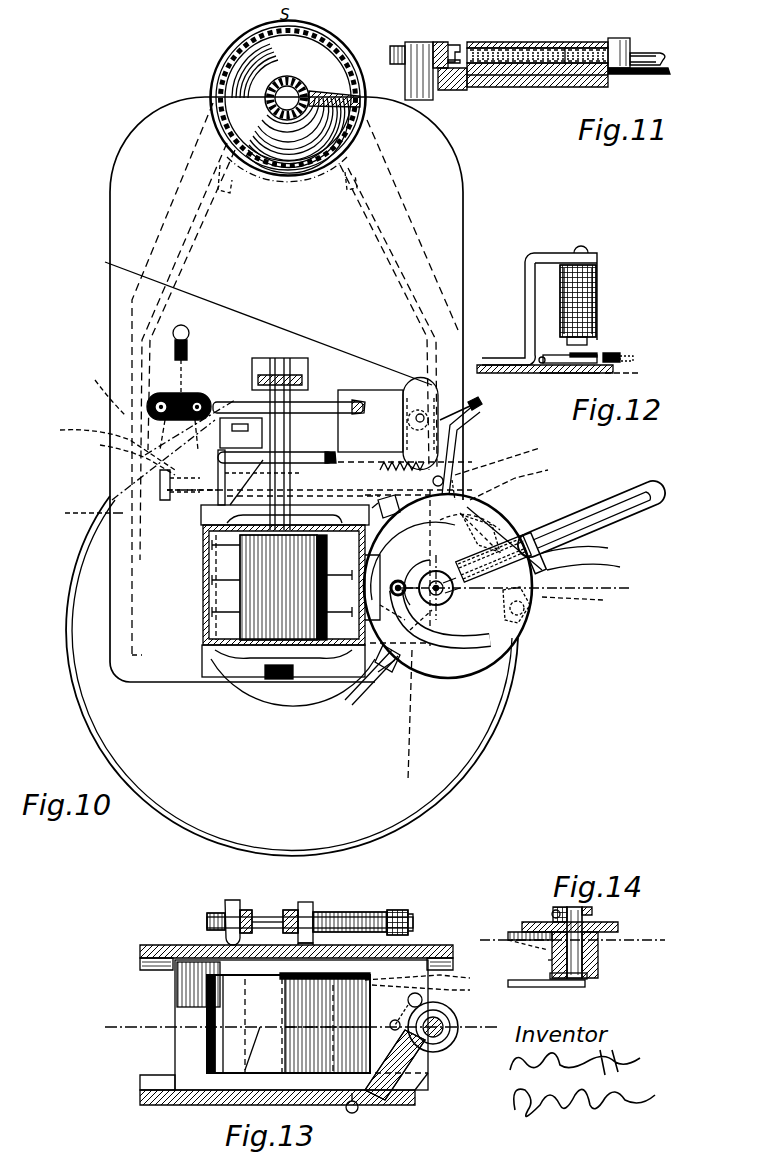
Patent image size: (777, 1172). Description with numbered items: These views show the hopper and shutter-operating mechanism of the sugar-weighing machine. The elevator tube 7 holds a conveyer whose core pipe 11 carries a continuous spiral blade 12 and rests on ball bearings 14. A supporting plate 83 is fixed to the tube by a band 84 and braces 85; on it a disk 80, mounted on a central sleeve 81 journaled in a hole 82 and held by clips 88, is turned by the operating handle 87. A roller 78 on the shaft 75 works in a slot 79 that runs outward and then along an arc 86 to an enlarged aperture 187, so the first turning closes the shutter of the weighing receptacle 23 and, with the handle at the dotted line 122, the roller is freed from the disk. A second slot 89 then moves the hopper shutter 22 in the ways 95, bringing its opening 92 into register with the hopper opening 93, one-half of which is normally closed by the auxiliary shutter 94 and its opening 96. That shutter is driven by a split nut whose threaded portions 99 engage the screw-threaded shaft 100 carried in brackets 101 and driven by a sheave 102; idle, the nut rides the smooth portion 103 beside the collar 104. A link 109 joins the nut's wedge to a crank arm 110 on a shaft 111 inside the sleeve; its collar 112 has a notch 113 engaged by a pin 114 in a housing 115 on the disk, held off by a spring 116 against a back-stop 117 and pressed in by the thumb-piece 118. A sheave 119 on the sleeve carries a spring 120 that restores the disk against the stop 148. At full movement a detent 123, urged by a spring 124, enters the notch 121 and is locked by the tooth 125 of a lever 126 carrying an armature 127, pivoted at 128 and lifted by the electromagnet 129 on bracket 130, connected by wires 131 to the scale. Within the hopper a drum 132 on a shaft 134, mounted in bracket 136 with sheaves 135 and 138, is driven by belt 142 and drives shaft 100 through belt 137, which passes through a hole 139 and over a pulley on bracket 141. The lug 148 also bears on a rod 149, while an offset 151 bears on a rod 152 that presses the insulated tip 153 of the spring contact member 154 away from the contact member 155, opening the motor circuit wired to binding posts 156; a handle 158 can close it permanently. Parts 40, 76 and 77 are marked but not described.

In FIG. 10, the elevator tube 7 is at (336, 62).
In FIG. 10, the small pipe 11 is at (300, 82).
In FIG. 10, the continuous spiral blade 12 is at (342, 86).
In FIG. 10, the ball bearings 14 is at (555, 588).
In FIG. 13, the ball bearings 14 is at (295, 1028).
In FIG. 13, the hopper shutter 22 is at (432, 1075).
In FIG. 10, the weighing receptacle 23 is at (388, 832).
In FIG. 13, the pawl 40 is at (395, 1050).
In FIG. 10, the shaft 75 is at (533, 608).
In FIG. 10, the disc rim 76 is at (515, 648).
In FIG. 10, the stop 77 is at (584, 606).
In FIG. 10, the roller 78 is at (500, 520).
In FIG. 10, the slot 79 is at (470, 498).
In FIG. 10, the disk 80 is at (488, 670).
In FIG. 11, the disk 80 is at (498, 90).
In FIG. 14, the disk 80 is at (532, 921).
In FIG. 11, the central sleeve 81 is at (452, 97).
In FIG. 13, the central sleeve 81 is at (455, 1040).
In FIG. 14, the central sleeve 81 is at (600, 950).
In FIG. 14, the hole 82 is at (548, 960).
In FIG. 10, the supporting plate 83 is at (99, 420).
In FIG. 12, the supporting plate 83 is at (533, 374).
In FIG. 14, the supporting plate 83 is at (510, 935).
In FIG. 10, the band 84 is at (222, 72).
In FIG. 10, the braces 85 is at (186, 162).
In FIG. 10, the arc 86 is at (380, 555).
In FIG. 10, the operating handle 87 is at (622, 486).
In FIG. 11, the operating handle 87 is at (634, 75).
In FIG. 10, the clips 88 is at (405, 506).
In FIG. 10, the slot 89 is at (455, 606).
In FIG. 13, the opening 92 is at (360, 972).
In FIG. 13, the hopper opening 93 is at (324, 1017).
In FIG. 13, the auxiliary shutter 94 is at (178, 1005).
In FIG. 13, the cleats or ways 95 is at (133, 969).
In FIG. 13, the opening 96 is at (212, 1040).
In FIG. 13, the internally threaded portions 99 is at (307, 911).
In FIG. 13, the shaft 100 is at (350, 912).
In FIG. 13, the brackets 101 is at (216, 906).
In FIG. 13, the sheave 102 is at (238, 898).
In FIG. 13, the reduced smooth portion 103 is at (318, 912).
In FIG. 13, the collar 104 is at (290, 908).
In FIG. 13, the link 109 is at (423, 980).
In FIG. 14, the link 109 is at (525, 985).
In FIG. 13, the crank arm 110 is at (430, 994).
In FIG. 14, the crank arm 110 is at (575, 984).
In FIG. 10, the shaft 111 is at (448, 587).
In FIG. 11, the shaft 111 is at (436, 45).
In FIG. 14, the shaft 111 is at (600, 968).
In FIG. 10, the collar 112 is at (395, 651).
In FIG. 11, the collar 112 is at (456, 45).
In FIG. 14, the collar 112 is at (558, 902).
In FIG. 11, the notch 113 is at (466, 66).
In FIG. 14, the notch 113 is at (595, 910).
In FIG. 10, the pin 114 is at (545, 578).
In FIG. 11, the pin 114 is at (512, 48).
In FIG. 10, the housing 115 is at (520, 532).
In FIG. 11, the housing 115 is at (570, 46).
In FIG. 11, the spring 116 is at (622, 38).
In FIG. 10, the back-stop 117 is at (590, 549).
In FIG. 11, the back-stop 117 is at (632, 50).
In FIG. 10, the thumb-piece 118 is at (600, 569).
In FIG. 13, the sheave 119 is at (448, 1010).
In FIG. 14, the sheave 119 is at (540, 955).
In FIG. 13, the spring 120 is at (365, 1103).
In FIG. 10, the notch 121 is at (350, 697).
In FIG. 10, the dotted line 122 is at (414, 722).
In FIG. 10, the detent 123 is at (452, 455).
In FIG. 12, the detent 123 is at (622, 374).
In FIG. 10, the spring 124 is at (387, 472).
In FIG. 12, the tooth 125 is at (570, 373).
In FIG. 10, the lever 126 is at (457, 412).
In FIG. 12, the lever 126 is at (608, 355).
In FIG. 12, the armature 127 is at (585, 353).
In FIG. 12, the pivot 128 is at (536, 357).
In FIG. 12, the electromagnet 129 is at (598, 286).
In FIG. 10, the bracket 130 is at (405, 400).
In FIG. 12, the bracket 130 is at (546, 247).
In FIG. 10, the wires 131 is at (88, 482).
In FIG. 10, the drum 132 is at (240, 602).
In FIG. 10, the shaft 134 is at (288, 356).
In FIG. 10, the sheave 135 is at (238, 402).
In FIG. 10, the bracket 136 is at (262, 378).
In FIG. 10, the belt 137 is at (222, 478).
In FIG. 10, the sheave 138 is at (292, 452).
In FIG. 10, the hole 139 is at (209, 502).
In FIG. 10, the bracket 141 is at (242, 447).
In FIG. 10, the belt 142 is at (341, 407).
In FIG. 10, the stop or lug 148 is at (504, 470).
In FIG. 10, the rod 149 is at (513, 453).
In FIG. 10, the offset 151 is at (319, 479).
In FIG. 10, the rod 152 is at (80, 514).
In FIG. 10, the insulated tip 153 is at (121, 453).
In FIG. 10, the spring contact member 154 is at (93, 441).
In FIG. 10, the contact member 155 is at (95, 380).
In FIG. 10, the binding posts 156 is at (157, 395).
In FIG. 10, the handle 158 is at (180, 326).
In FIG. 10, the enlarged aperture 187 is at (384, 593).